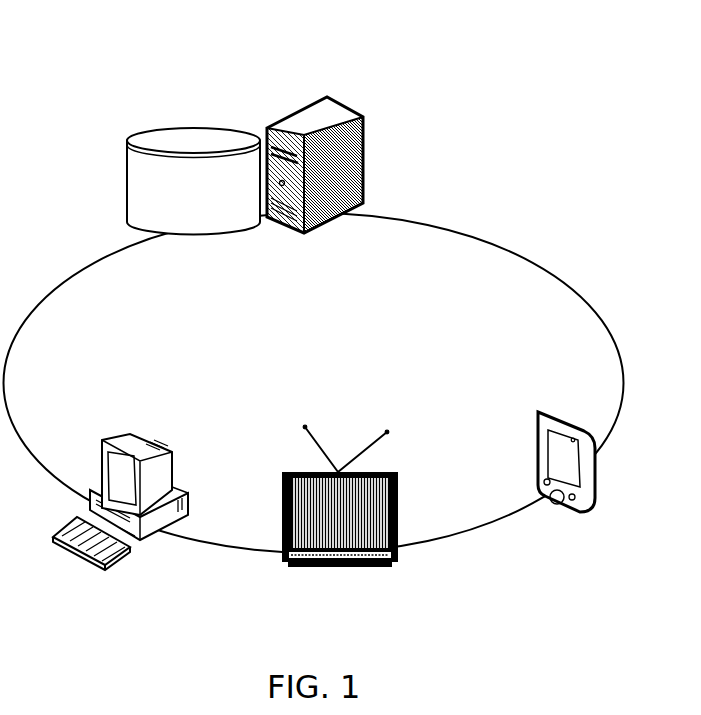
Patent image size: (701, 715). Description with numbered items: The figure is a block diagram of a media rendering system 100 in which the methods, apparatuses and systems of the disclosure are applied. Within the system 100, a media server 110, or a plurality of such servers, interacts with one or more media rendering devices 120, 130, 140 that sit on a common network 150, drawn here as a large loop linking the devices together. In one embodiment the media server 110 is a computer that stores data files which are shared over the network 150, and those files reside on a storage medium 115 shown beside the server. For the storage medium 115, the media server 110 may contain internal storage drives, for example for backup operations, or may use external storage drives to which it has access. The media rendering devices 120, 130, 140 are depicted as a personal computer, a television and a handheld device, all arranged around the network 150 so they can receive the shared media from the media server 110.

The media rendering system 100 is at (528, 40).
The media server 110 is at (328, 96).
The storage medium 115 is at (212, 214).
The media rendering device 120 is at (158, 537).
The media rendering device 130 is at (342, 563).
The media rendering device 140 is at (585, 512).
The network 150 is at (340, 394).